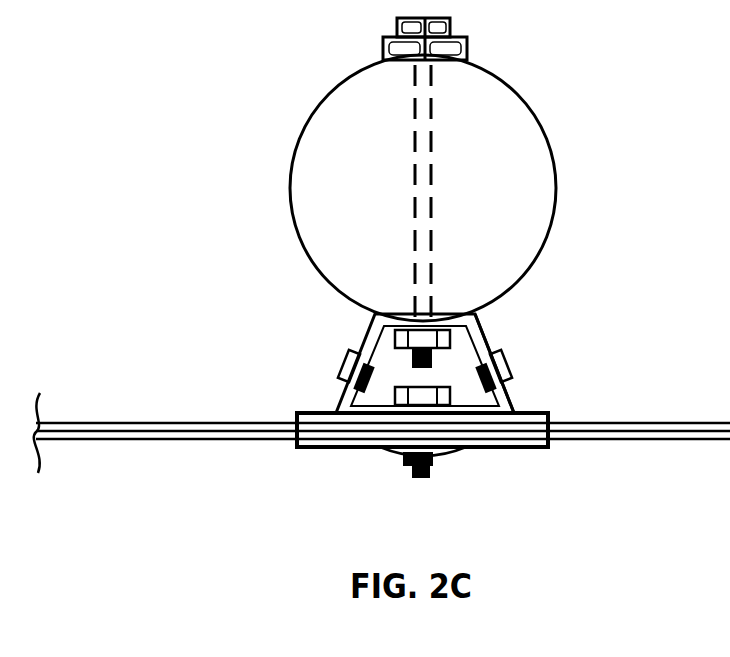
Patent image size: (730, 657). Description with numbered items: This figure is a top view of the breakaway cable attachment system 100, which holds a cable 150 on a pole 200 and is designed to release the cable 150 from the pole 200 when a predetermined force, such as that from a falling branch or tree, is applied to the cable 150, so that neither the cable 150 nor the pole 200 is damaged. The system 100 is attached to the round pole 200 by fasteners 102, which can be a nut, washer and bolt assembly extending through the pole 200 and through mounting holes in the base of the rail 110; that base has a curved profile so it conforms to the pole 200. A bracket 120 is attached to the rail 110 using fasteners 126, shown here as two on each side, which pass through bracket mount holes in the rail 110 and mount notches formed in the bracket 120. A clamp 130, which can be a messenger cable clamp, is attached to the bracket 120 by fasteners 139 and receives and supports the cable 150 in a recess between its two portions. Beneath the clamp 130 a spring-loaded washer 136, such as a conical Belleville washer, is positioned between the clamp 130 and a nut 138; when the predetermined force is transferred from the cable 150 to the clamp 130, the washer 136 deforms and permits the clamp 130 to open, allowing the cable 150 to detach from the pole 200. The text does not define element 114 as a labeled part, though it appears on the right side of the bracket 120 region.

The breakaway cable attachment system 100 is at (609, 291).
The fasteners 102 is at (412, 107).
The rail 110 is at (482, 323).
The bracket side arm 114 is at (490, 338).
The bracket 120 is at (340, 408).
The fasteners 126 is at (340, 358).
The clamp 130 is at (300, 416).
The spring-loaded washer 136 is at (452, 450).
The nut 138 is at (408, 457).
The fasteners 139 is at (432, 479).
The cable 150 is at (173, 439).
The pole 200 is at (297, 143).